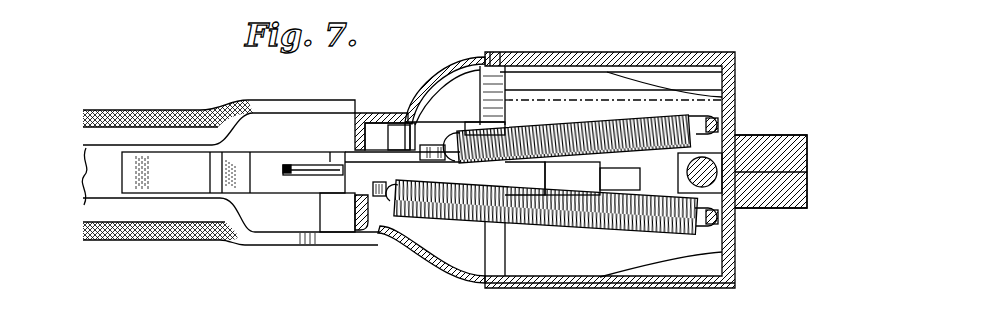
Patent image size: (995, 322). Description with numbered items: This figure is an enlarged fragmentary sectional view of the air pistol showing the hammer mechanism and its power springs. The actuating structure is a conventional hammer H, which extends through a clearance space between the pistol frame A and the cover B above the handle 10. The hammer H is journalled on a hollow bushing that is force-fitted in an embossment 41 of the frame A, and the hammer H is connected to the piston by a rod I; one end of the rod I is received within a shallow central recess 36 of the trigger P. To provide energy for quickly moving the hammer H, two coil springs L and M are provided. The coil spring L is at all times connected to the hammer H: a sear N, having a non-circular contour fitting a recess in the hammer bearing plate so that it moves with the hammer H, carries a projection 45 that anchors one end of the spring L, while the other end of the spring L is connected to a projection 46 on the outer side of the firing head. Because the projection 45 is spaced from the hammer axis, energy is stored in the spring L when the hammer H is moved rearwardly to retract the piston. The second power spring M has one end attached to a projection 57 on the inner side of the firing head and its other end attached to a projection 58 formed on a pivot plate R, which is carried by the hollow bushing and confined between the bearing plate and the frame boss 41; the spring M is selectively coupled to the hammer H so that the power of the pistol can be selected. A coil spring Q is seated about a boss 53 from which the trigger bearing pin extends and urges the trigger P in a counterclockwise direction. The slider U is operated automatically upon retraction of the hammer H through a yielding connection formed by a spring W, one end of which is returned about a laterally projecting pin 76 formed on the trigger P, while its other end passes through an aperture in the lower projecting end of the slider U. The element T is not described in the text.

The handle 10 is at (80, 176).
The outer tube T is at (150, 242).
The hammer H is at (180, 162).
The rod I is at (305, 168).
The shallow central recess 36 is at (287, 164).
The projection 45 is at (354, 193).
The embossment 41 is at (386, 132).
The pivot plate R is at (397, 145).
The projection 58 is at (425, 150).
The boss 53 is at (478, 129).
The coil spring Q is at (510, 132).
The coil spring M is at (652, 120).
The projection 57 is at (720, 125).
The pistol frame A is at (740, 68).
The cover B is at (742, 285).
The slider U is at (714, 168).
The coil spring L is at (596, 224).
The projection 46 is at (720, 226).
The sear N is at (388, 207).
The spring W is at (580, 190).
The laterally projecting pin 76 is at (565, 196).
The trigger P is at (519, 188).